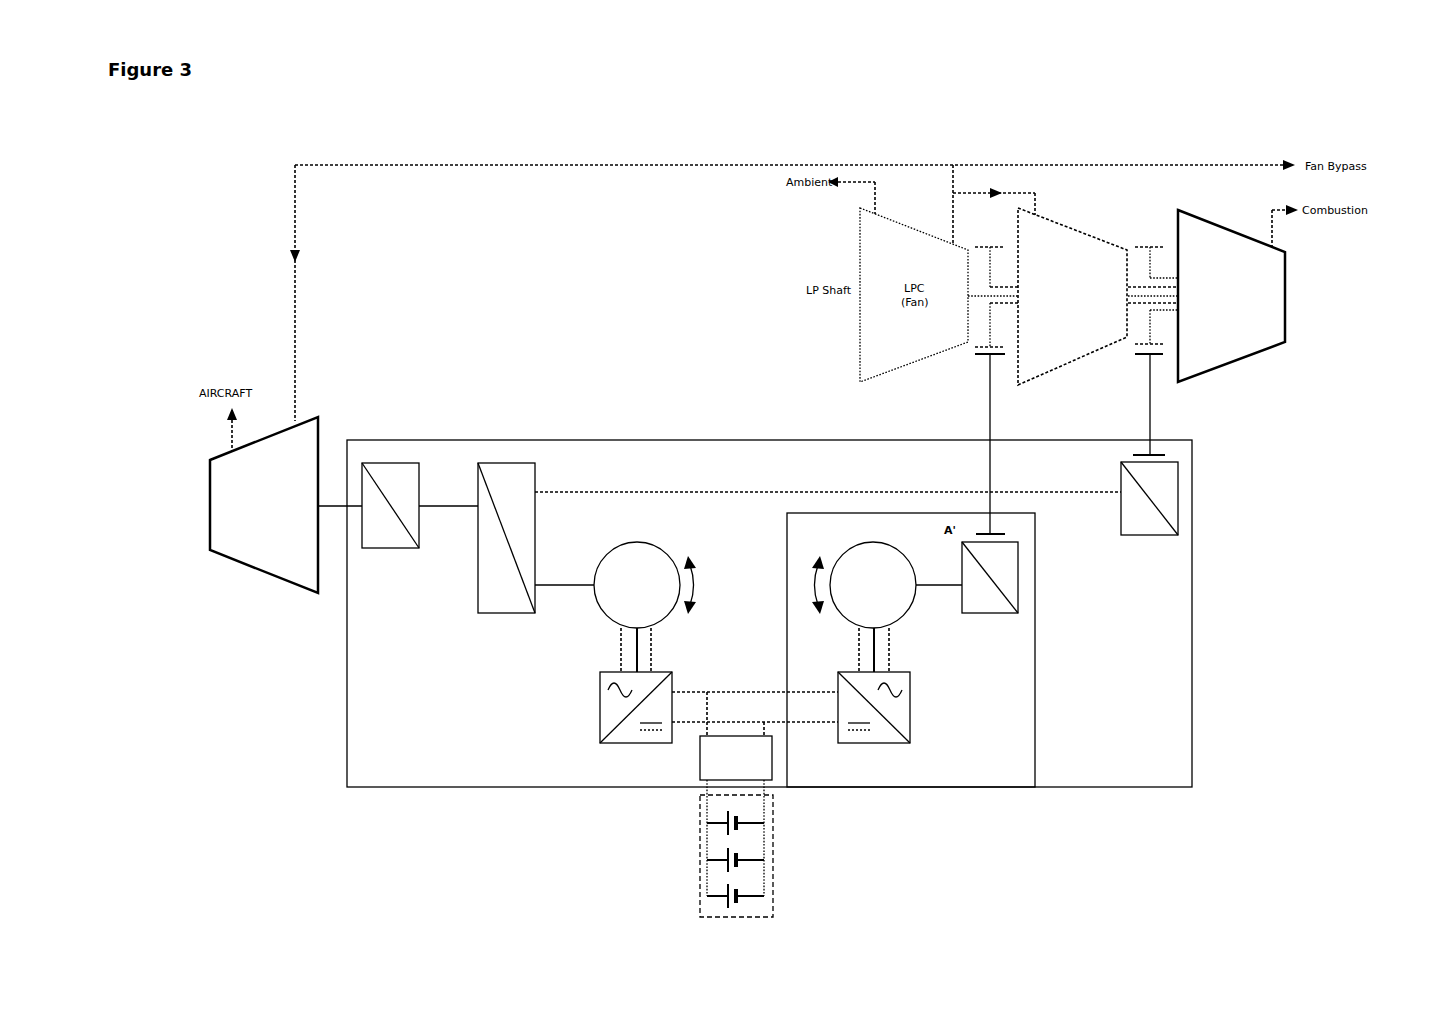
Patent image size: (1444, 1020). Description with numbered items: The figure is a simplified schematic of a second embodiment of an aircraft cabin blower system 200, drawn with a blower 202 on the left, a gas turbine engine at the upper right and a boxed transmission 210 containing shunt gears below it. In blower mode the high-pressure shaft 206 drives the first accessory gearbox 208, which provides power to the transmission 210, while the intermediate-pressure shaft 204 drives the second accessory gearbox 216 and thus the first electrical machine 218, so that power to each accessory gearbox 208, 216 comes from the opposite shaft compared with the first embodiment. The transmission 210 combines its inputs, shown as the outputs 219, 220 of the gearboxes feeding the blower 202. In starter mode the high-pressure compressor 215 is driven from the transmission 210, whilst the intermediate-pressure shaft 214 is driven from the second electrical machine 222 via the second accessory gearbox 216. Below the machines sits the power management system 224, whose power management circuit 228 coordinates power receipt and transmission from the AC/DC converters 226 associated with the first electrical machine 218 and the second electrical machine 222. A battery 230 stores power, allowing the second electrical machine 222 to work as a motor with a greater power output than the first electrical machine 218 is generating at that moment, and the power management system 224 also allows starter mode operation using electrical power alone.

The cabin blower system 200 is at (1316, 68).
The blower 202 is at (210, 478).
The intermediate-pressure shaft 204 is at (987, 323).
The high-pressure shaft 206 is at (1147, 325).
The first accessory gearbox 208 is at (1178, 483).
The transmission 210 is at (424, 613).
The intermediate-pressure shaft 214 is at (1018, 230).
The high-pressure compressor 215 is at (1173, 232).
The second accessory gearbox 216 is at (1020, 577).
The first electrical machine 218 is at (912, 610).
The gearbox B output X 219 is at (552, 497).
The output shaft Y 220 is at (556, 588).
The second electrical machine 222 is at (632, 541).
The power management system 224 is at (640, 781).
The AC/DC converters 226 is at (598, 732).
The power management circuit 228 is at (773, 758).
The battery 230 is at (773, 853).